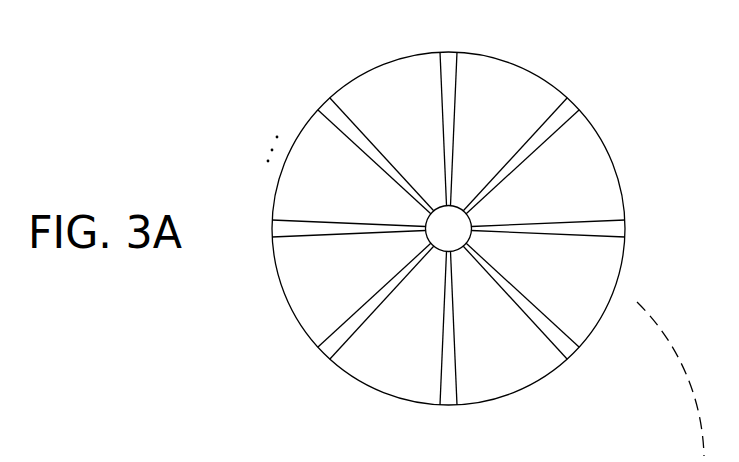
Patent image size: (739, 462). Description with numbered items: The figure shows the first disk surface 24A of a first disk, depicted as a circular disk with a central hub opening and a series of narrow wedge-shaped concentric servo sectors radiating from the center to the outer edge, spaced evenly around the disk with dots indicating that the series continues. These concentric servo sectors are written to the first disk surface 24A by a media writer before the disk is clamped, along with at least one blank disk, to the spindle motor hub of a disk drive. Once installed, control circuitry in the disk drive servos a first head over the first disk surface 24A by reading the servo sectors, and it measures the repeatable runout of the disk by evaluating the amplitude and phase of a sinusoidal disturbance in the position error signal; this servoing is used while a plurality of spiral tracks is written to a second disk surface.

The first disk surface 24A is at (564, 71).